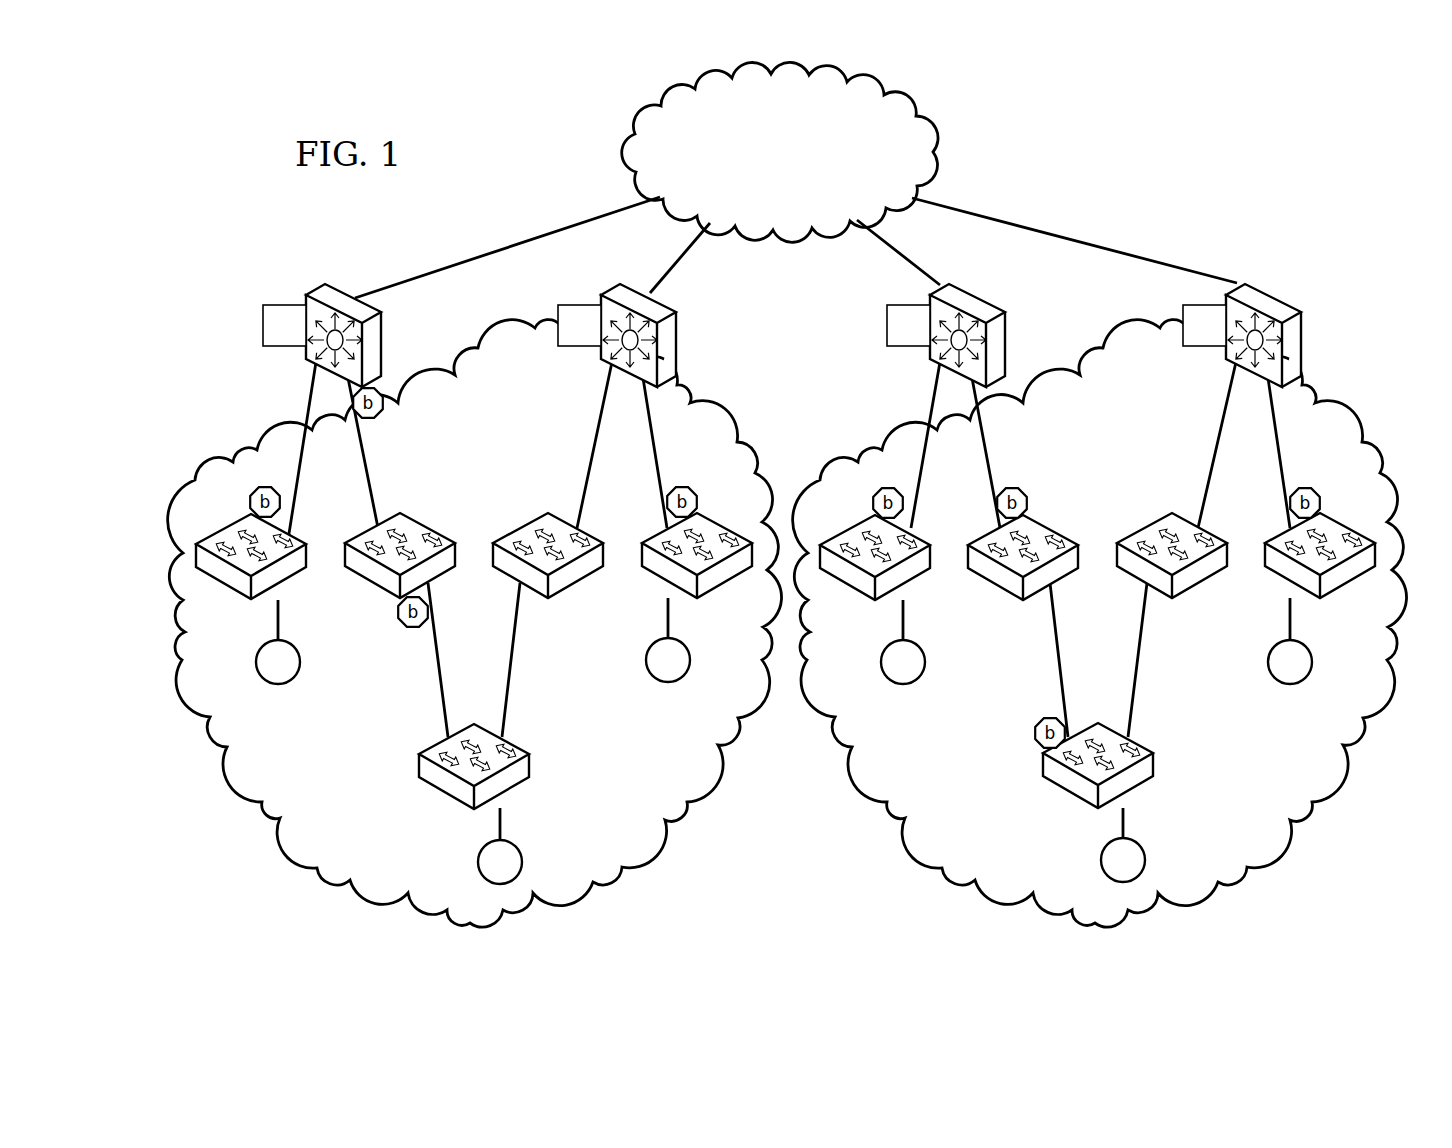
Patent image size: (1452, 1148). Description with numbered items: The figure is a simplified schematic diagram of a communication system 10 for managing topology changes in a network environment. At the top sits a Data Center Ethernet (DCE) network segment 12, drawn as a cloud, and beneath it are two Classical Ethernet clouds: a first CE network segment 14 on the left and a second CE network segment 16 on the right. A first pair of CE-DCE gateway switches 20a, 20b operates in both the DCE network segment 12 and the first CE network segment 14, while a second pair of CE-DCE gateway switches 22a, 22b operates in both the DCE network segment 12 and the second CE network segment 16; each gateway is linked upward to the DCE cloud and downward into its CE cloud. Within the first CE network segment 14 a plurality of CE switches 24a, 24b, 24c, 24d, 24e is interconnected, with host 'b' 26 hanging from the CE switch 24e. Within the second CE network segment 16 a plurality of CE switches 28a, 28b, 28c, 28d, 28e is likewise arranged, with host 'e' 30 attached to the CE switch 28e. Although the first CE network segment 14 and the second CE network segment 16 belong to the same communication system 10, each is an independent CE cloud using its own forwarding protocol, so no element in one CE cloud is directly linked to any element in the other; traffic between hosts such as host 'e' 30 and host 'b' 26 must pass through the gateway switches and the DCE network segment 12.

The communication system 10 is at (1258, 165).
The Data Center Ethernet (DCE) network segment 12 is at (768, 186).
The CE-1 network segment 14 is at (273, 428).
The CE-2 network segment 16 is at (1349, 407).
The CE-DCE gateway switch S1 20a is at (317, 287).
The CE-DCE gateway switch S2 20b is at (612, 287).
The CE-DCE gateway switch S3 22a is at (982, 295).
The CE-DCE gateway switch S4 22b is at (1276, 295).
The CE switch 24a is at (294, 580).
The CE switch 24b is at (427, 527).
The CE switch 24c is at (575, 585).
The CE switch 24d is at (720, 527).
The CE switch 24e is at (418, 767).
The host 'b' 26 is at (478, 862).
The CE switch 28a is at (917, 580).
The CE switch 28b is at (1062, 528).
The CE switch 28c is at (1198, 585).
The CE switch 28d is at (1343, 527).
The CE switch 28e is at (1154, 770).
The host 'e' 30 is at (1146, 866).